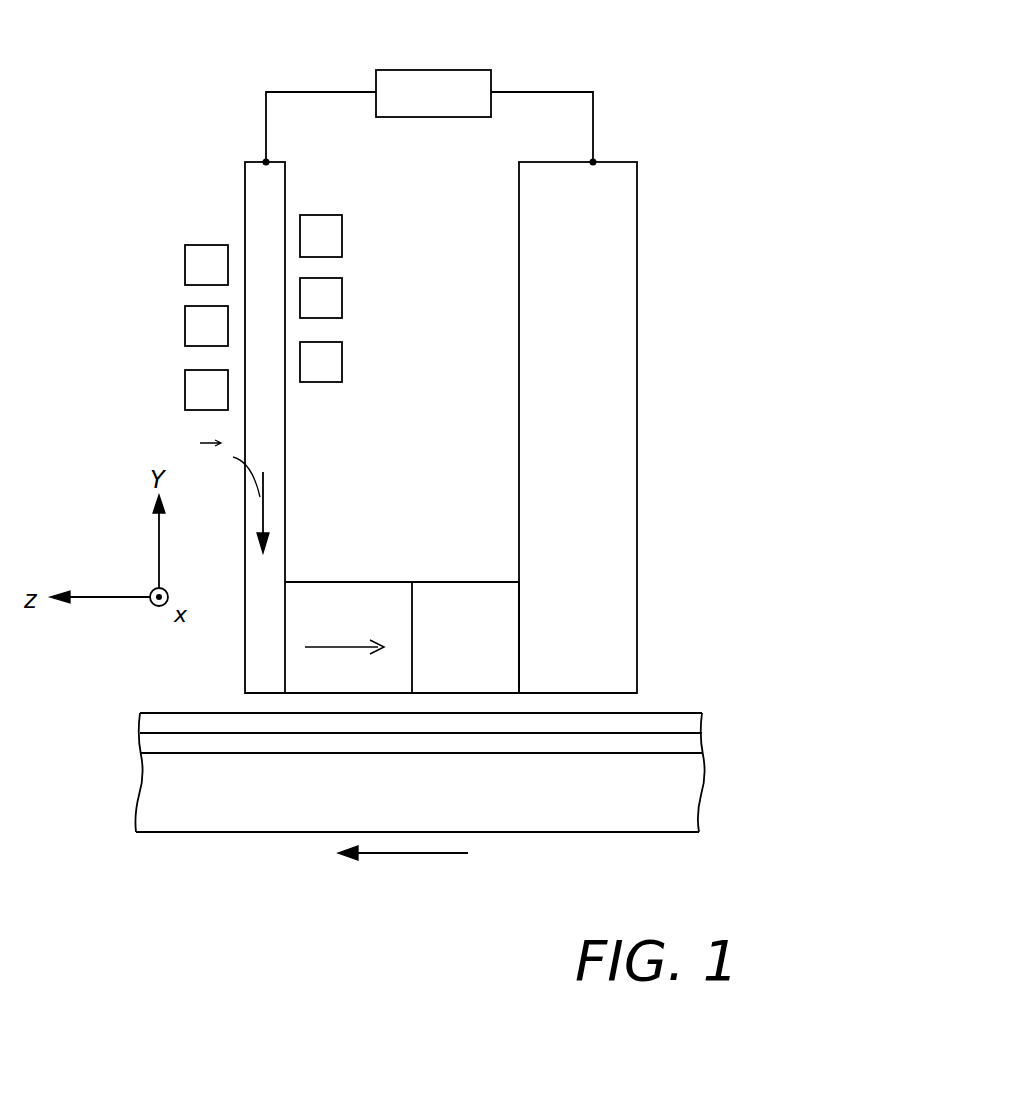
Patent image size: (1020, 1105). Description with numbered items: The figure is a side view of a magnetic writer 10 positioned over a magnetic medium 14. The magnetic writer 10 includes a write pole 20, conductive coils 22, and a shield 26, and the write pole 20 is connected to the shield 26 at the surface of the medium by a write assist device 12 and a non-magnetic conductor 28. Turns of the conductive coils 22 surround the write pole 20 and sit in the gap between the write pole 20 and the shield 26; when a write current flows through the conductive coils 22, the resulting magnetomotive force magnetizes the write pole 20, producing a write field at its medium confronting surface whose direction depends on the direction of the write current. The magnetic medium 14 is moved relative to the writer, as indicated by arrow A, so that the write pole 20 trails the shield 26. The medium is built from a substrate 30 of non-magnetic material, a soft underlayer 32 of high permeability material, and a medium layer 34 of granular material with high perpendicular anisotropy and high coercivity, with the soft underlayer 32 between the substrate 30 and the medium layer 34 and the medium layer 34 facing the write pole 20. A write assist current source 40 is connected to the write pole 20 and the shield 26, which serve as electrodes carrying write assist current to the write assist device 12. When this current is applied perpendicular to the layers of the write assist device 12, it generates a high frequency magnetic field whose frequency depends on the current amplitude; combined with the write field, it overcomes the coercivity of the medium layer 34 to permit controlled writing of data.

The magnetic writer 10 is at (675, 100).
The write assist device 12 is at (362, 590).
The magnetic medium 14 is at (440, 793).
The write pole 20 is at (285, 424).
The conductive coils 22 is at (190, 270).
The shield 26 is at (600, 416).
The non-magnetic conductor 28 is at (475, 651).
The substrate 30 is at (152, 795).
The soft underlayer 32 is at (148, 740).
The medium layer 34 is at (145, 723).
The write assist current source 40 is at (446, 70).